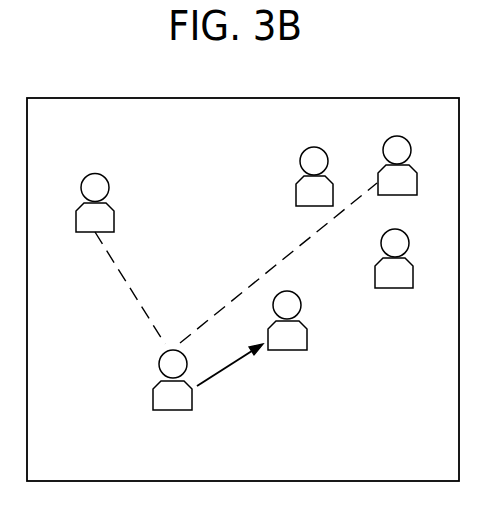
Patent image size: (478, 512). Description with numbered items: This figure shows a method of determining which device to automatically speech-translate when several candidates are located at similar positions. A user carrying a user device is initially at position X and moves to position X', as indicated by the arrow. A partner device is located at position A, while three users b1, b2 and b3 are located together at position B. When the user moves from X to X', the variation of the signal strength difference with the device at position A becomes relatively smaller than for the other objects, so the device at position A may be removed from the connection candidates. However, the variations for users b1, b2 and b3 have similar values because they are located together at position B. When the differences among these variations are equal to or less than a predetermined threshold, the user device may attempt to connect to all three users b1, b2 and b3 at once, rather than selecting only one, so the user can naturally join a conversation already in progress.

The position A is at (95, 185).
The position B is at (356, 211).
The user b1 is at (410, 165).
The user b2 is at (402, 275).
The user b3 is at (301, 176).
The position X is at (172, 396).
The position X' is at (287, 335).